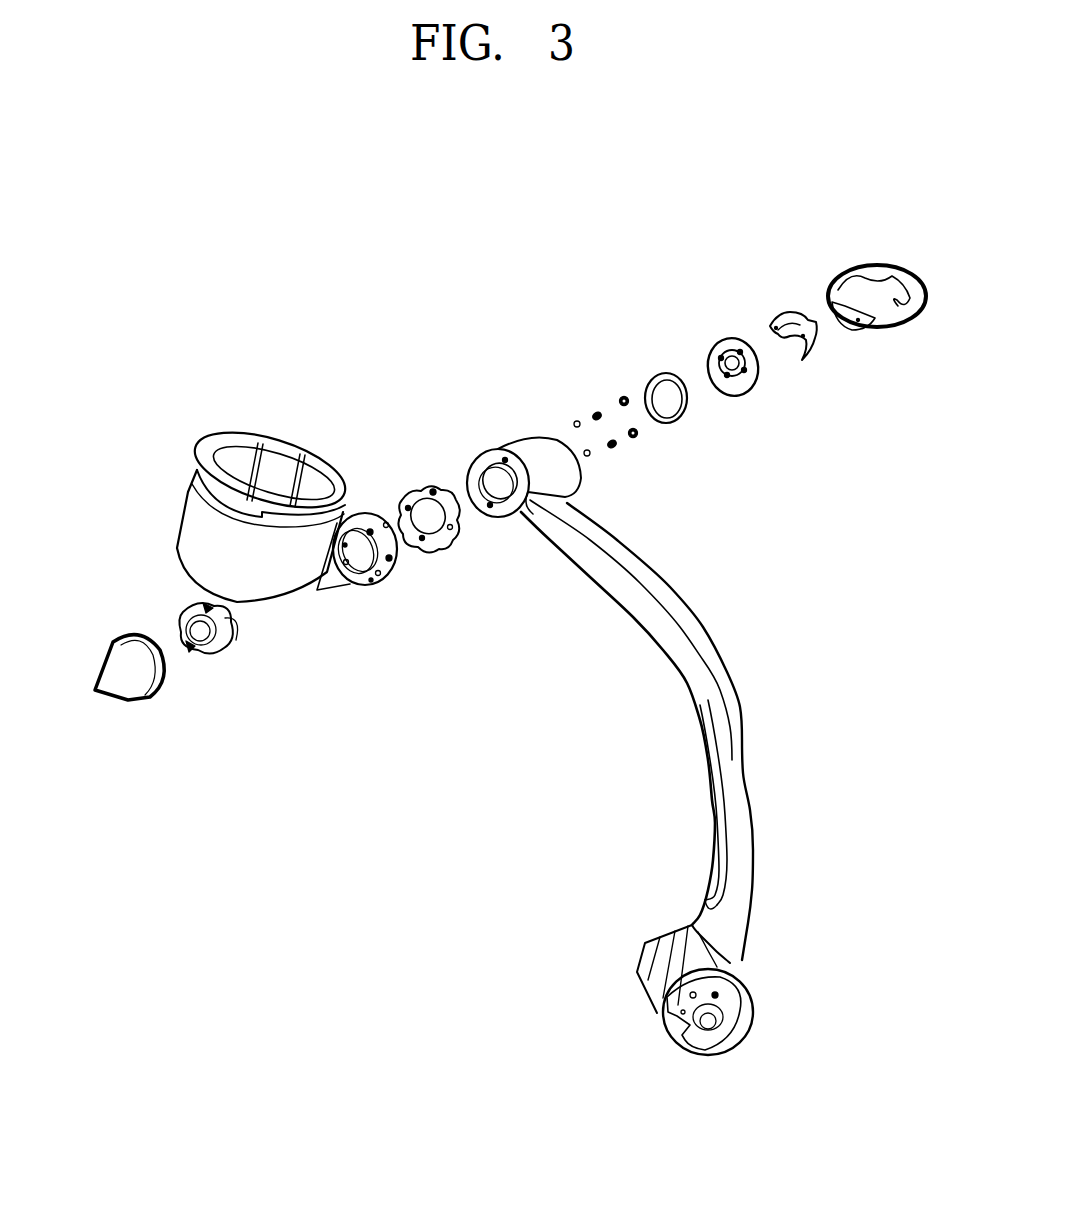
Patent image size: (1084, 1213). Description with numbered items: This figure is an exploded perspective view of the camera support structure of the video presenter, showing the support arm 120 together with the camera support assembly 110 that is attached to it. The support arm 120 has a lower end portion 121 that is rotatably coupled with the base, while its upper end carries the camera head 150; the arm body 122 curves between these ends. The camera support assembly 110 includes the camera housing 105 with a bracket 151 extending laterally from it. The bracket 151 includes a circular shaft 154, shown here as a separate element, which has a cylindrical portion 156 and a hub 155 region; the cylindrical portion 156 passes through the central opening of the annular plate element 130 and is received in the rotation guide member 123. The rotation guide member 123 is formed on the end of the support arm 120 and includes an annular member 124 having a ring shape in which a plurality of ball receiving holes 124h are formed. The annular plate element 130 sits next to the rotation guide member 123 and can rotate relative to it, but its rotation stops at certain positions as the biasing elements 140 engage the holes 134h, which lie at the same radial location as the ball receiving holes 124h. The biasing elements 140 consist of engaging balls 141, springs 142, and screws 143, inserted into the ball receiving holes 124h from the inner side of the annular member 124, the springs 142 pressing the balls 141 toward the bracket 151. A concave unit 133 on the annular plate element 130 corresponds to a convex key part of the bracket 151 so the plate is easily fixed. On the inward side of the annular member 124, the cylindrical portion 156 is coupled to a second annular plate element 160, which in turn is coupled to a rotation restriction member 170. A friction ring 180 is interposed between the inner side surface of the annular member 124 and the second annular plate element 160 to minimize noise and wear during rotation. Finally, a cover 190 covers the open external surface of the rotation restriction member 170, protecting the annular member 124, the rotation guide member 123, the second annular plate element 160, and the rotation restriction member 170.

The camera support assembly 110 is at (252, 268).
The camera head 150 is at (172, 474).
The camera housing 105 is at (299, 580).
The bracket 151 is at (372, 590).
The hub nut 155 is at (207, 655).
The cylindrical portion 156 is at (232, 630).
The circular shaft 154 is at (284, 706).
The cover 190 is at (128, 688).
The annular plate element 130 is at (398, 490).
The concave unit 133 is at (436, 550).
The holes 134h is at (427, 480).
The support arm 120 is at (698, 678).
The rotation guide member 123 is at (521, 440).
The annular member 124 is at (486, 460).
The ball receiving holes 124h is at (493, 518).
The arm body 122 is at (574, 512).
The lower end portion 121 is at (731, 1018).
The biasing elements 140 is at (650, 318).
The ball 141 is at (575, 421).
The springs 142 is at (597, 410).
The screws 143 is at (627, 397).
The friction ring 180 is at (673, 418).
The second annular plate element 160 is at (745, 386).
The rotation restriction member 170 is at (786, 318).